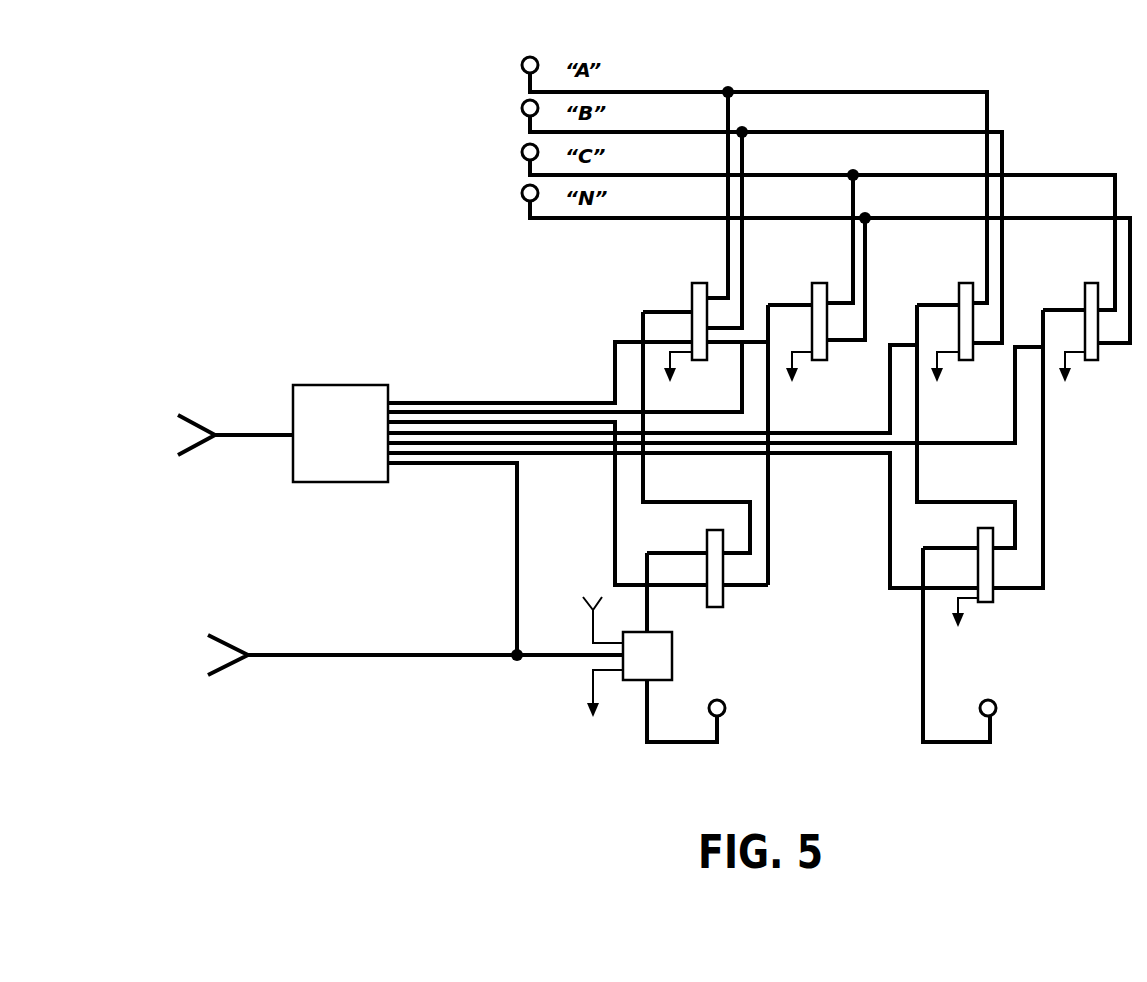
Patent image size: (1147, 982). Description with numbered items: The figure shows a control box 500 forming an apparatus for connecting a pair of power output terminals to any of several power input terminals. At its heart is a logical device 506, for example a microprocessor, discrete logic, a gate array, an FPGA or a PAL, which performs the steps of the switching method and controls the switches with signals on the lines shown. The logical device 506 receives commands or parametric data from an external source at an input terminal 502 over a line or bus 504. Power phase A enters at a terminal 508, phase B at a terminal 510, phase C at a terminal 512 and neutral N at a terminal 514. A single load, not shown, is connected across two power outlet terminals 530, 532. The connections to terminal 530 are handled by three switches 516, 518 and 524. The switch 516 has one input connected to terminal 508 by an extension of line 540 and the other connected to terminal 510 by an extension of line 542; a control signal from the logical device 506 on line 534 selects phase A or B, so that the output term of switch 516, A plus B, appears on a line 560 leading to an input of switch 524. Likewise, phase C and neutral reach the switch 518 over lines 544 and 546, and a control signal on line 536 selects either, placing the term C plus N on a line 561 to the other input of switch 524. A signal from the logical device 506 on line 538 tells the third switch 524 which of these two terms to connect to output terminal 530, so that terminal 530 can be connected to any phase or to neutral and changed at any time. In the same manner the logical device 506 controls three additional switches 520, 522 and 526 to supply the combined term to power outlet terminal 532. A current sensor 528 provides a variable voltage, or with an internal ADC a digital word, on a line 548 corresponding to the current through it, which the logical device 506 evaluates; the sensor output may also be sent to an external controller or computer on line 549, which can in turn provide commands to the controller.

The control box 500 is at (311, 231).
The input terminal 502 is at (197, 453).
The line or bus 504 is at (267, 432).
The logical device 506 is at (342, 484).
The terminal 508 is at (521, 66).
The terminal 510 is at (521, 109).
The terminal 512 is at (521, 153).
The terminal 514 is at (521, 194).
The switch 516 is at (700, 361).
The switch 518 is at (820, 361).
The switch 520 is at (966, 361).
The switch 522 is at (1092, 361).
The third switch 524 is at (723, 597).
The switch 526 is at (993, 597).
The current sensor 528 is at (672, 657).
The power outlet terminal 530 is at (724, 705).
The power outlet terminal 532 is at (996, 710).
The line 534 is at (465, 402).
The line 536 is at (532, 412).
The line 538 is at (613, 487).
The line 540 is at (618, 92).
The line 542 is at (652, 132).
The line 544 is at (619, 176).
The line 546 is at (687, 219).
The line 548 is at (514, 582).
The line 549 is at (353, 657).
The line 560 is at (665, 502).
The line 561 is at (770, 487).